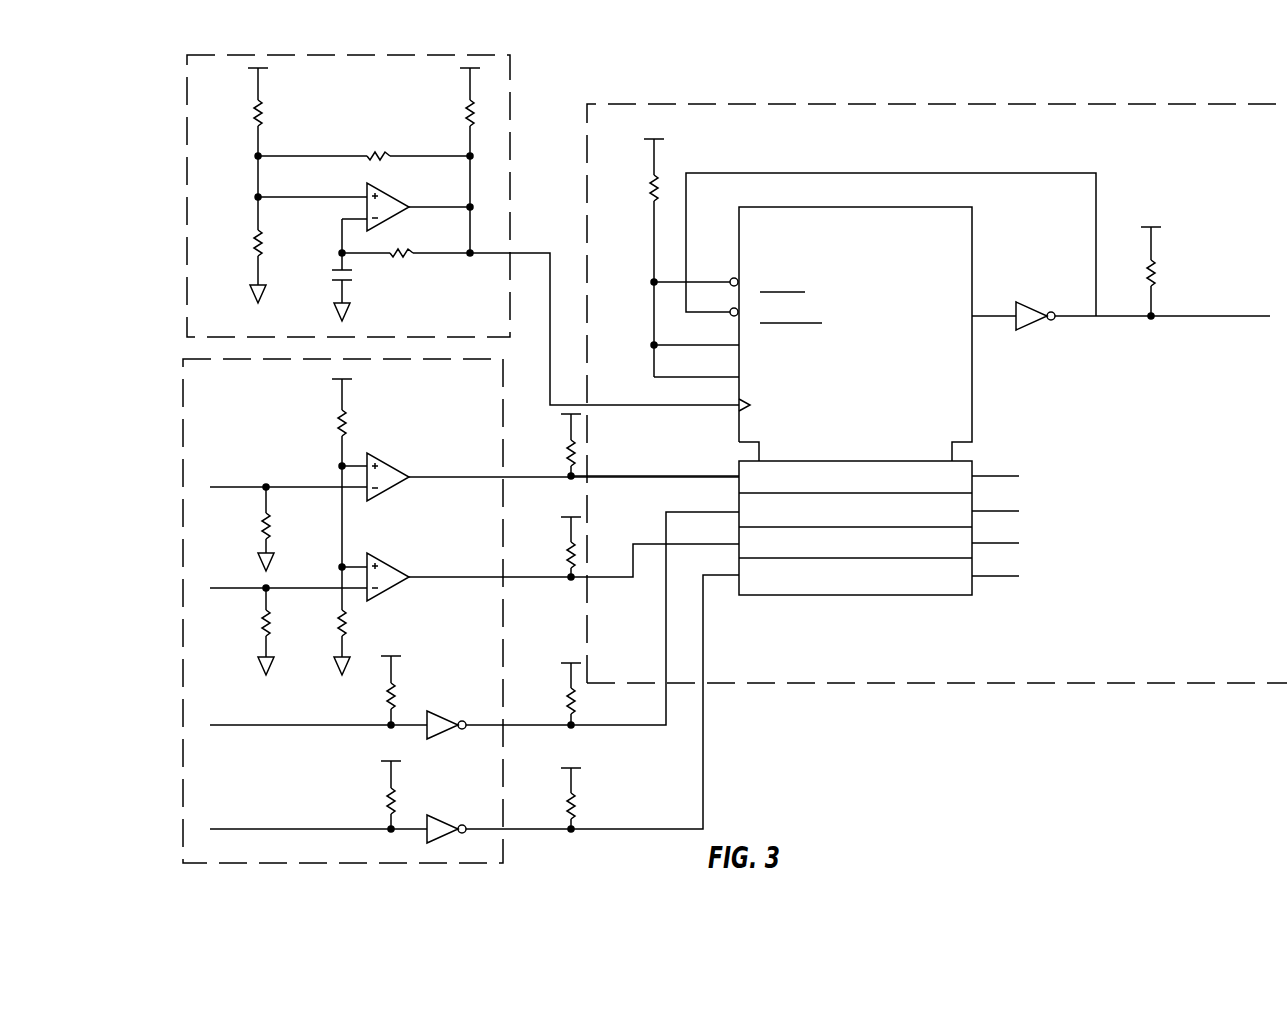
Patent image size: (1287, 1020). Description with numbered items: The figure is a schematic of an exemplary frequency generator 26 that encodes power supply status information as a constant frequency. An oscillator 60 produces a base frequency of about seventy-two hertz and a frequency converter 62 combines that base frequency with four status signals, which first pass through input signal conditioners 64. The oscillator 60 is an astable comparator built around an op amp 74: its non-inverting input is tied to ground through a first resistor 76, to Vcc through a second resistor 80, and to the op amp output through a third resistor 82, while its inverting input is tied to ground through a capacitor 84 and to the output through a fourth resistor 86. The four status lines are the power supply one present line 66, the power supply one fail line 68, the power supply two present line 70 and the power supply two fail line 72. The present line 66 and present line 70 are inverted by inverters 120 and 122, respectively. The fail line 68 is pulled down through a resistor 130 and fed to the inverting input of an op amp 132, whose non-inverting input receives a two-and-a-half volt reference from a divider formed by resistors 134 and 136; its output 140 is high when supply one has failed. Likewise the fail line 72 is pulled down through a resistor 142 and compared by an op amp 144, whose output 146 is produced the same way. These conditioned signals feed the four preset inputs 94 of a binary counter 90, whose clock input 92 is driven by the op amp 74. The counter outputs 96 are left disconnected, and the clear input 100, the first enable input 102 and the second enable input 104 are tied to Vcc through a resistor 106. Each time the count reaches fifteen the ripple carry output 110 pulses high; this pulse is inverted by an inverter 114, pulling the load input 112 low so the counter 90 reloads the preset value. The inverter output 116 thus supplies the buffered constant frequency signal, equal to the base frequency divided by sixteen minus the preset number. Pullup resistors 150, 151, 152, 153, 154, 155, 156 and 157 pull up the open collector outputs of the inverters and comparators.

The frequency generator 26 is at (165, 175).
The oscillator 60 is at (187, 122).
The frequency converter 62 is at (970, 104).
The input signal conditioners 64 is at (183, 570).
The Power Supply 1 Present (1P) status line 66 is at (223, 829).
The Power Supply 1 Fail (1F) status line 68 is at (228, 588).
The Power Supply 2 Present (2P) status line 70 is at (223, 725).
The Power Supply 2 Fail (2F) status line 72 is at (228, 487).
The operational amplifier 74 is at (402, 203).
The first 100 kΩ resistor 76 is at (258, 243).
The second 100 kΩ resistor 80 is at (258, 110).
The third 100 kΩ resistor 82 is at (395, 152).
The 0.1 μf capacitor 84 is at (342, 270).
The fourth 100 kΩ resistor 86 is at (415, 257).
The binary counter 90 is at (953, 595).
The clock input 92 is at (720, 406).
The preset inputs 94 is at (721, 584).
The counter outputs 96 is at (993, 586).
The CLR control input 100 is at (700, 282).
The ENT control input 102 is at (713, 345).
The ENP control input 104 is at (713, 377).
The 1 kΩ resistor 106 is at (654, 178).
The ripple carry output 110 is at (988, 316).
The LOAD control input 112 is at (747, 173).
The inverter 114 is at (1033, 302).
The output of the inverter 116 is at (1075, 317).
The inverter 120 is at (436, 816).
The inverter 122 is at (436, 712).
The 1 kΩ resistor 130 is at (266, 622).
The op amp 132 is at (402, 572).
The 1 kΩ resistor 134 is at (342, 415).
The 1 kΩ resistor 136 is at (342, 625).
The output of op amp 140 is at (423, 579).
The 1 kΩ resistor 142 is at (266, 522).
The op amp 144 is at (402, 472).
The output of op amp 146 is at (423, 479).
The 1 kΩ pullup resistor 150 is at (470, 110).
The 1 kΩ pullup resistor 151 is at (391, 687).
The 1 kΩ pullup resistor 152 is at (391, 792).
The 1 kΩ pullup resistor 153 is at (571, 445).
The 1 kΩ pullup resistor 154 is at (571, 546).
The 1 kΩ pullup resistor 155 is at (571, 694).
The 1 kΩ pullup resistor 156 is at (571, 798).
The 1 kΩ pullup resistor 157 is at (1151, 268).